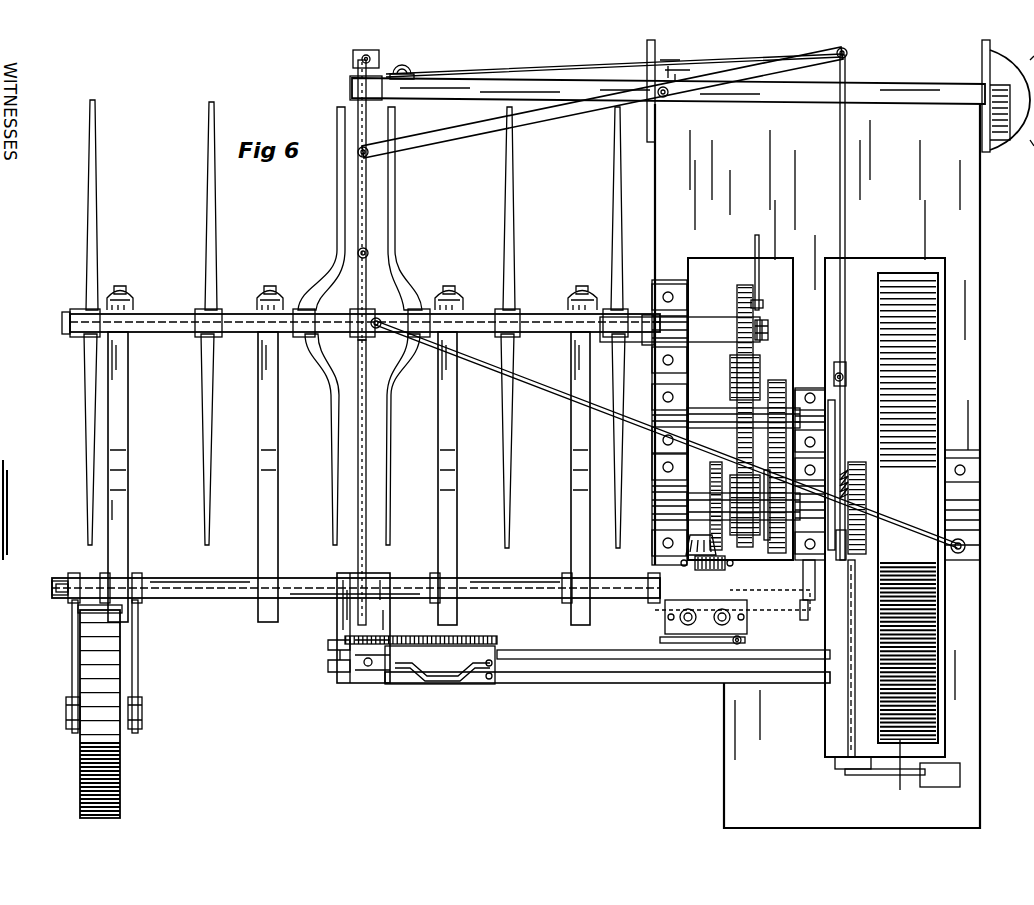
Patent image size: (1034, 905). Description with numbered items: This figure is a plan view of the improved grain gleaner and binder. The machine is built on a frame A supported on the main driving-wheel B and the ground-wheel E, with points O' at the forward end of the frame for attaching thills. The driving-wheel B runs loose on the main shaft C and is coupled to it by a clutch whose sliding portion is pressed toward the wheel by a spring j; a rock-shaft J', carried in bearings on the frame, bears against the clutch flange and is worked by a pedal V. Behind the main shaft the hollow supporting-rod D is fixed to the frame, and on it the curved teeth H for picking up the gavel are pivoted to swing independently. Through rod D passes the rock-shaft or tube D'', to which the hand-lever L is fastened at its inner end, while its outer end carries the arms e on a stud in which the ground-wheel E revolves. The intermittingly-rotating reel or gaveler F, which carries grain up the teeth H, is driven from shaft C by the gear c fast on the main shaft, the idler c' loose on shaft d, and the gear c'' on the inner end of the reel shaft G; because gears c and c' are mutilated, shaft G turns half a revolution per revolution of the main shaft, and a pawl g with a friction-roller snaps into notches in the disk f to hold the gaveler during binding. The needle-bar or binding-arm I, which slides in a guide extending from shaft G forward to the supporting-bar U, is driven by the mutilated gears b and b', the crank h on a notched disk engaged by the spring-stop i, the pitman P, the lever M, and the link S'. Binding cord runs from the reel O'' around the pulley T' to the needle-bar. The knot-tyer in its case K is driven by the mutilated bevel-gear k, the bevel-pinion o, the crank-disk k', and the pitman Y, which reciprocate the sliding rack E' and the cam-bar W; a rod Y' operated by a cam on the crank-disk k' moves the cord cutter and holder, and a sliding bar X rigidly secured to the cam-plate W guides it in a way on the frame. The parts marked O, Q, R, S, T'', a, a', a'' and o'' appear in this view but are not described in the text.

The frame A is at (817, 466).
The main driving-wheel B is at (908, 508).
The main shaft C is at (712, 495).
The supporting-rod D is at (356, 601).
The rock-shaft or tube D'' is at (411, 607).
The ground-wheel E is at (107, 711).
The sliding rack E' is at (327, 649).
The intermittingly-rotating reel or gaveler F is at (354, 324).
The shaft G is at (411, 315).
The teeth H is at (349, 478).
The needle-bar or binding-arm I is at (362, 482).
The rock-shaft J' is at (851, 664).
The knot-tyer case K is at (363, 644).
The hand-lever L is at (807, 590).
The lever M is at (604, 108).
The bearings O is at (352, 289).
The thill attachment points O' is at (825, 103).
The cord reel O'' is at (1012, 100).
The pitman P is at (849, 307).
The pivot Q is at (381, 341).
The connecting rod R is at (666, 434).
The pivot S is at (970, 554).
The link S' is at (372, 200).
The pulley T' is at (597, 64).
The block T'' is at (645, 384).
The supporting-bar U is at (667, 83).
The pedal V is at (902, 774).
The cam-bar or cam-plate W is at (440, 677).
The sliding bar X is at (607, 691).
The pitman Y is at (663, 662).
The rod Y' is at (442, 626).
The gear a is at (853, 503).
The bearing column a' is at (656, 422).
The bearing column a'' is at (806, 474).
The gear b is at (760, 517).
The gear b' is at (777, 455).
The gear c is at (743, 529).
The idler gear c' is at (736, 445).
The gear c'' is at (732, 416).
The shaft d is at (743, 430).
The arm e is at (103, 666).
The disk f is at (762, 339).
The spring or pawl g is at (761, 272).
The crank h is at (840, 386).
The spring-stop i is at (831, 475).
The spring j is at (836, 545).
The mutilated bevel-gear k is at (701, 544).
The crank-disk k' is at (711, 647).
The bevel-pinion o is at (707, 559).
The pins o'' is at (499, 668).